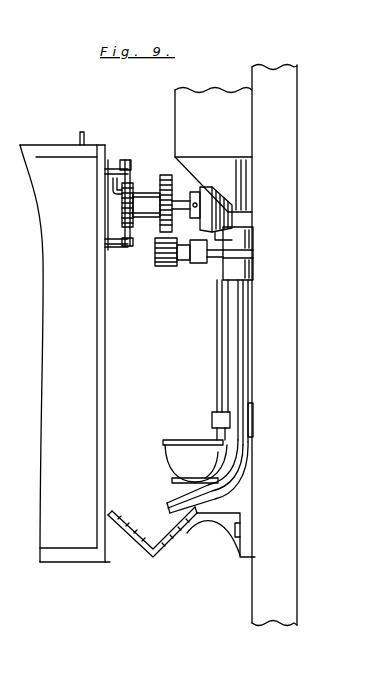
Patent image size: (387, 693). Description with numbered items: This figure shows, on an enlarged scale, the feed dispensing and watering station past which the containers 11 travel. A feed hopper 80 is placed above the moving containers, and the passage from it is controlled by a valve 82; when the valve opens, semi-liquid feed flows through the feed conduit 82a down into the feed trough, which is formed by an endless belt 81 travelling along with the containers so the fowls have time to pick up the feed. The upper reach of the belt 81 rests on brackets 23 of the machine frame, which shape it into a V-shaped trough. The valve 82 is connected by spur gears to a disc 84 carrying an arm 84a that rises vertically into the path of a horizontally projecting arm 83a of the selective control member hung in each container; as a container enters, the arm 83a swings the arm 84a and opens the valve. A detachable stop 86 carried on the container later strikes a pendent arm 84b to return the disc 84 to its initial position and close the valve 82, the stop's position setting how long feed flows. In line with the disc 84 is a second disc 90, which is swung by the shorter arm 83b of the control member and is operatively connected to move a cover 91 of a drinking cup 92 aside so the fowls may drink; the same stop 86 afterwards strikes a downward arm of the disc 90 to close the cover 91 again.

The container 11 is at (45, 337).
The bracket 23 is at (212, 525).
The feed hopper 80 is at (195, 95).
The belt 81 is at (125, 522).
The valve 82 is at (237, 259).
The feed conduit 82a is at (242, 367).
The arm 83a is at (79, 141).
The shorter arm 83b is at (111, 160).
The disc 84 is at (129, 192).
The arm 84a is at (122, 172).
The pendent arm 84b is at (127, 243).
The stop 86 is at (117, 248).
The second disc 90 is at (117, 193).
The cover 91 is at (188, 440).
The drinking cup 92 is at (172, 462).